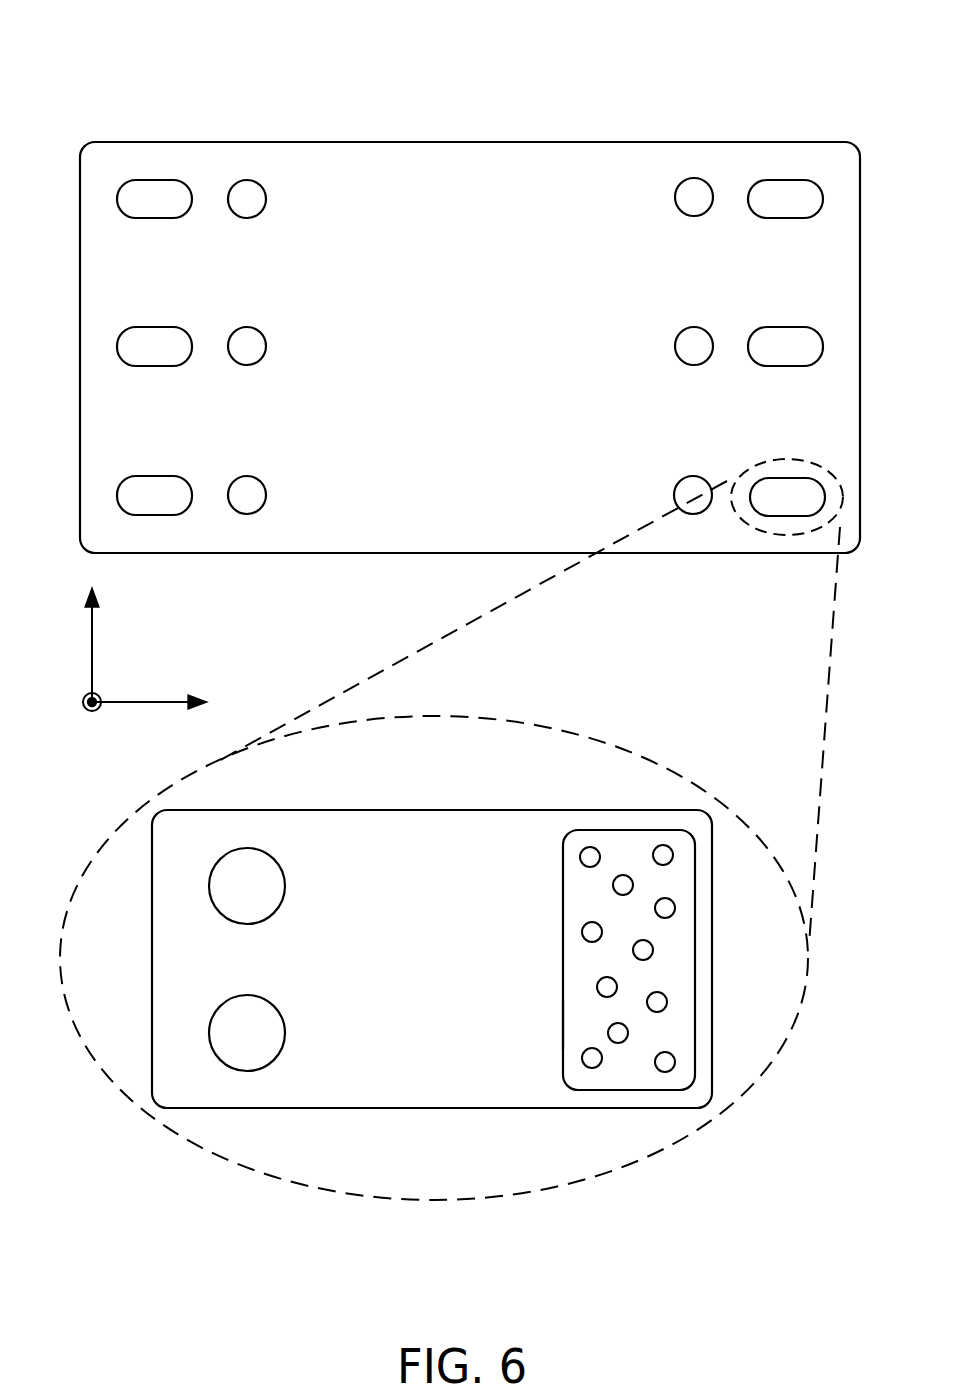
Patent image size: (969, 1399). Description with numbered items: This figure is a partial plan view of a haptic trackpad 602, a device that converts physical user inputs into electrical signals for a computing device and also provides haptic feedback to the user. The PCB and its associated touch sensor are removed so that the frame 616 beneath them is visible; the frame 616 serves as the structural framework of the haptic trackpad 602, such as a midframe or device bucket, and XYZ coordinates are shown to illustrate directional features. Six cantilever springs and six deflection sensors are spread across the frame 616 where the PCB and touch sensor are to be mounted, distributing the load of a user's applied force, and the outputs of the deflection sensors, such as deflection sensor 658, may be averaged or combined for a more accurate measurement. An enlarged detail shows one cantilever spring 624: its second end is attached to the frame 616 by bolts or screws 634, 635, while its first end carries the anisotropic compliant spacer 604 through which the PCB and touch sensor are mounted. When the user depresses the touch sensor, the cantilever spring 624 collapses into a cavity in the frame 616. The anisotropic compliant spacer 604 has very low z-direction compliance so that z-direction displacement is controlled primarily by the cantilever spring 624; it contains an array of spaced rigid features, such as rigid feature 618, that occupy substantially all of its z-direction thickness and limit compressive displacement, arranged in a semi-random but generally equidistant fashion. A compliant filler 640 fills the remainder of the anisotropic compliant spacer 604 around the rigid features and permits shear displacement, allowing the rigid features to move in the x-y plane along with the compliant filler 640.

The haptic trackpad 602 is at (126, 75).
The frame 616 is at (470, 347).
The deflection sensor 658 is at (676, 482).
The cantilever spring 624 is at (451, 829).
The bolt or screw 634 is at (247, 886).
The bolt or screw 635 is at (247, 1033).
The anisotropic compliant spacer 604 is at (563, 888).
The rigid feature 618 is at (600, 980).
The compliant filler 640 is at (585, 1025).